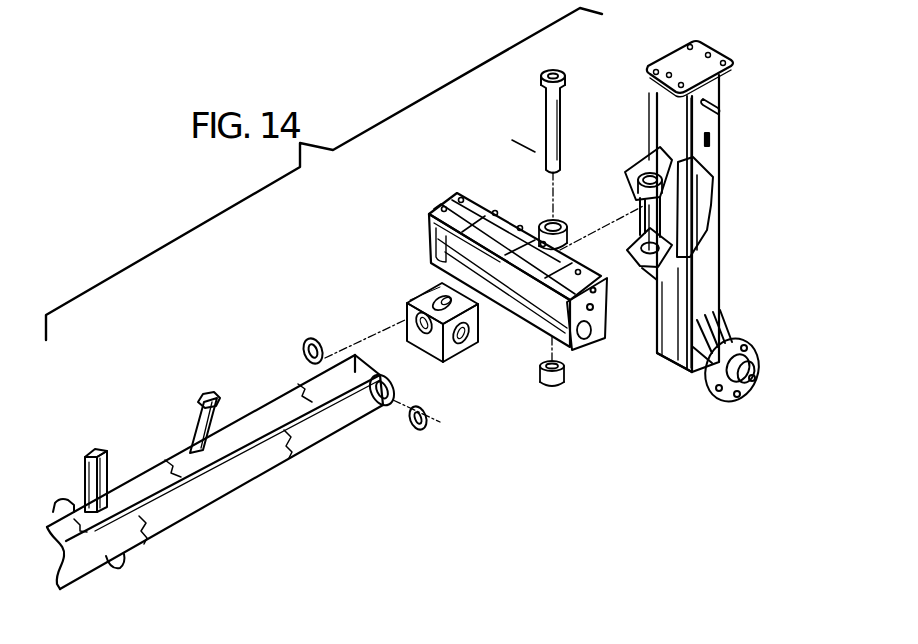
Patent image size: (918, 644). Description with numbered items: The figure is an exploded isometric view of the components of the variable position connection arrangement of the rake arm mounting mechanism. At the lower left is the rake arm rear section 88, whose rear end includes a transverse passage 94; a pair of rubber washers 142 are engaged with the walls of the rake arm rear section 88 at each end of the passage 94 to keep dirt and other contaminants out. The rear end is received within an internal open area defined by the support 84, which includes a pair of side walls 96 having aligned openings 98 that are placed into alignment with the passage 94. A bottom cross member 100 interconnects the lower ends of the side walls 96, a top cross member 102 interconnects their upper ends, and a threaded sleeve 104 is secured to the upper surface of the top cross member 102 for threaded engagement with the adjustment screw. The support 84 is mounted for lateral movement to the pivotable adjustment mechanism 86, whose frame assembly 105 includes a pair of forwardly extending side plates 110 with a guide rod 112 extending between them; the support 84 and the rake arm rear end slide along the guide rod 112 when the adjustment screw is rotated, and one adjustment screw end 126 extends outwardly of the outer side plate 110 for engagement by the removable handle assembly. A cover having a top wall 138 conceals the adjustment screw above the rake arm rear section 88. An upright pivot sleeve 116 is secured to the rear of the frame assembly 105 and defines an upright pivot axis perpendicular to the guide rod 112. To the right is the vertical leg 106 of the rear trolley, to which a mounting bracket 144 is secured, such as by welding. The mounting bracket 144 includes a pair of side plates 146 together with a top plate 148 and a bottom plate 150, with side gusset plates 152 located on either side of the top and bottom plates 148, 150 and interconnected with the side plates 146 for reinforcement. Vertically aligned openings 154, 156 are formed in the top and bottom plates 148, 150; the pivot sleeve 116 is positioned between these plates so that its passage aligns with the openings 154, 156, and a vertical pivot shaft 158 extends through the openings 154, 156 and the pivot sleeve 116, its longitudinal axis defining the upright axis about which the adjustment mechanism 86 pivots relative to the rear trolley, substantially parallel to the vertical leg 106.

The support 84 is at (404, 296).
The pivotable adjustment mechanism 86 is at (330, 198).
The rake arm rear section 88 is at (190, 520).
The transverse passage 94 is at (384, 407).
The side walls 96 is at (406, 302).
The openings 98 is at (406, 323).
The bottom cross member 100 is at (432, 368).
The top cross member 102 is at (427, 294).
The threaded sleeve 104 is at (433, 289).
The frame assembly 105 is at (455, 186).
The vertical leg 106 is at (720, 123).
The side plates 110 is at (600, 340).
The guide rod 112 is at (522, 318).
The upright pivot sleeve 116 is at (548, 224).
The adjustment screw end 126 is at (578, 345).
The top wall 138 is at (445, 210).
The rubber washers 142 is at (303, 345).
The mounting bracket 144 is at (713, 193).
The side plates 146 is at (712, 218).
The top plate 148 is at (697, 165).
The bottom plate 150 is at (683, 298).
The side gusset plates 152 is at (640, 152).
The opening 154 is at (641, 167).
The opening 156 is at (645, 262).
The vertical pivot shaft 158 is at (545, 101).